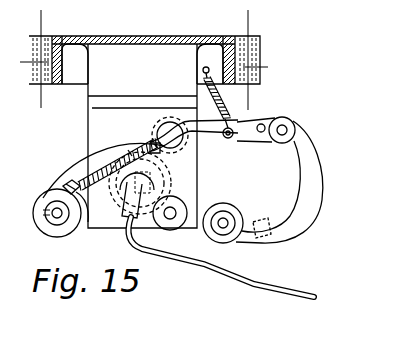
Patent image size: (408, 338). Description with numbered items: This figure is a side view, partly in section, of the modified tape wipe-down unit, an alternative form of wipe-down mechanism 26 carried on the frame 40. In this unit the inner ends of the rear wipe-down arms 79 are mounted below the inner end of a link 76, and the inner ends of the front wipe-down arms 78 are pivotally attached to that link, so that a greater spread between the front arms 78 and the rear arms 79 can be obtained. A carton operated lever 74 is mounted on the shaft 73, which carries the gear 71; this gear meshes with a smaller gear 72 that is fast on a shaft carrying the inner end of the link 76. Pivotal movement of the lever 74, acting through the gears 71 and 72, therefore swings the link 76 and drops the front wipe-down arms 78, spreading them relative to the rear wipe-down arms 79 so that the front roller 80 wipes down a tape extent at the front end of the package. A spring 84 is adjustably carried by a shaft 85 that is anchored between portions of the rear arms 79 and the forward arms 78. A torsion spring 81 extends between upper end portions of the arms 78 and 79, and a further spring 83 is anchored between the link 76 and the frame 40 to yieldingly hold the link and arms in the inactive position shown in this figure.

The frame 40 is at (103, 64).
The wipe-down mechanism 26 is at (84, 120).
The gear 72 is at (176, 112).
The gear 71 is at (128, 152).
The shaft 73 is at (186, 182).
The spring 84 is at (112, 186).
The carton operated lever 74 is at (240, 290).
The torsion spring 81 is at (50, 238).
The rear wipe-down arms 79 is at (83, 160).
The shaft 85 is at (62, 187).
The link 76 is at (208, 140).
The spring 83 is at (225, 108).
The front wipe-down arms 78 is at (312, 190).
The front roller 80 is at (226, 243).